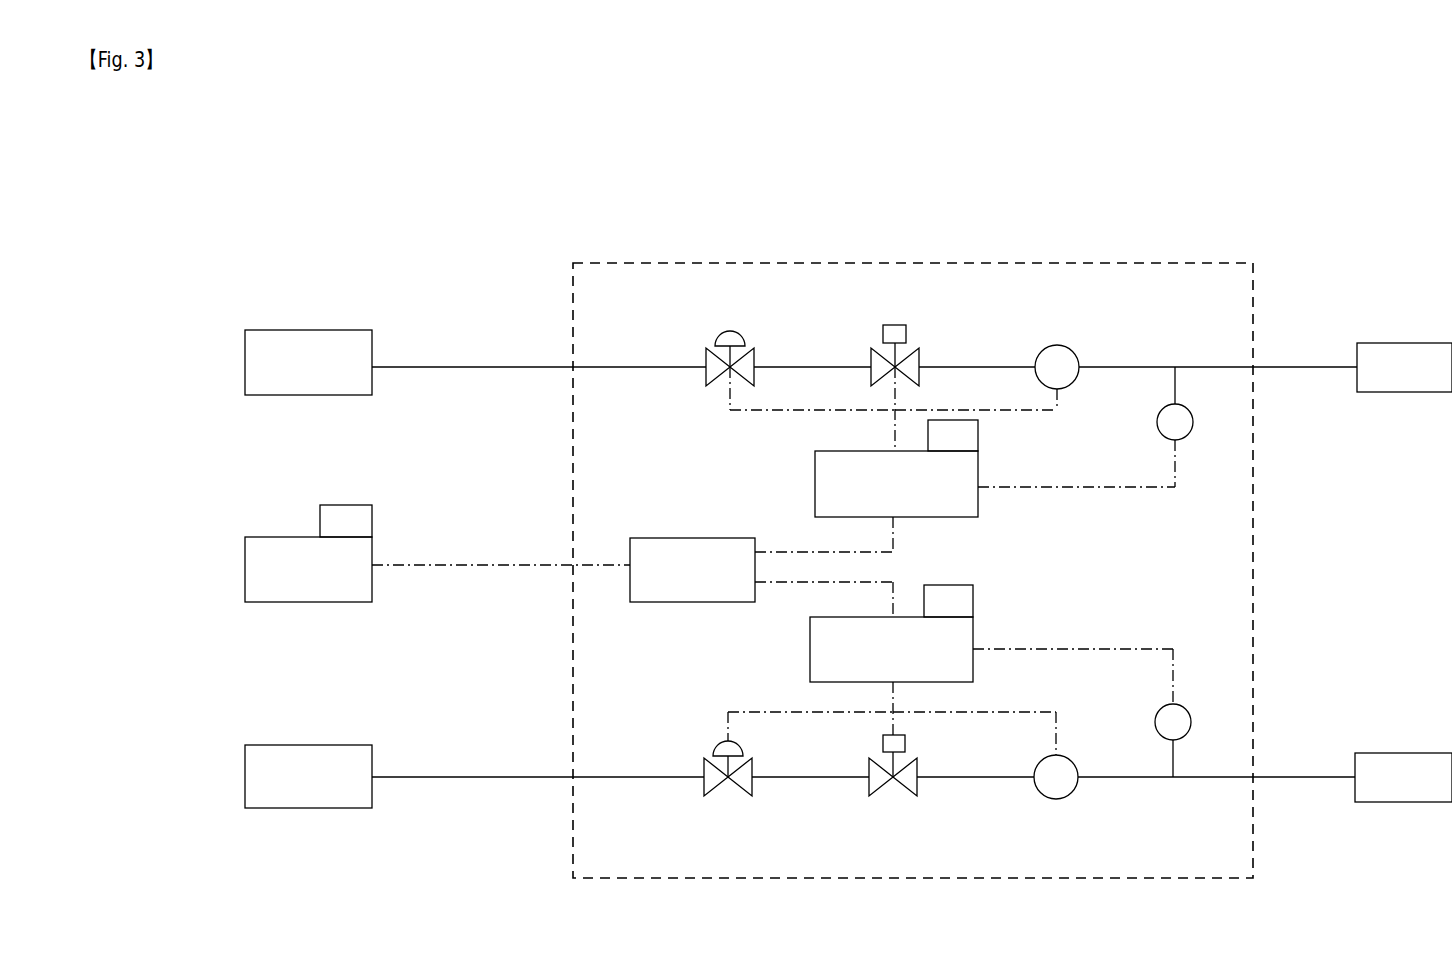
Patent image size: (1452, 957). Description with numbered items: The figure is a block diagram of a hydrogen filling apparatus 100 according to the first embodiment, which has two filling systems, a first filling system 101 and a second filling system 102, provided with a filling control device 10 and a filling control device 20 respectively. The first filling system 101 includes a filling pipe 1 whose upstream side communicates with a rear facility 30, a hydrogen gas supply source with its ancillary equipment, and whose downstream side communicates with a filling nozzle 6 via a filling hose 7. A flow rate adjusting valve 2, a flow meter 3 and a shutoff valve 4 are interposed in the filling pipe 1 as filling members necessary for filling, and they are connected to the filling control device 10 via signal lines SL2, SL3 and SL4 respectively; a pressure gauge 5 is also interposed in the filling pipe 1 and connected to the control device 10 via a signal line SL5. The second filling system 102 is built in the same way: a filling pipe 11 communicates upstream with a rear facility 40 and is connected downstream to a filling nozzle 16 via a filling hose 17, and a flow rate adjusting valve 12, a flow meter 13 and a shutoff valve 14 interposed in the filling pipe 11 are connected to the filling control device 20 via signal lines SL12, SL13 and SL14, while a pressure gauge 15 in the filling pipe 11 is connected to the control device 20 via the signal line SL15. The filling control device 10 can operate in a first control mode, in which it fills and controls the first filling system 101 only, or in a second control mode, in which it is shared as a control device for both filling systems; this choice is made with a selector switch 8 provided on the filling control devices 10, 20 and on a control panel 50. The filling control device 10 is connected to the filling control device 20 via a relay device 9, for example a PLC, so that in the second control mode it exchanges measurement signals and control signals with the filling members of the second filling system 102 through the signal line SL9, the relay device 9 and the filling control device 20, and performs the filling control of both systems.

The filling pipe 1 is at (636, 367).
The flow rate adjusting valve 2 is at (750, 346).
The flow meter 3 is at (1070, 350).
The shutoff valve 4 is at (912, 348).
The pressure gauge 5 is at (1187, 438).
The filling nozzle 6 is at (1410, 343).
The filling hose 7 is at (1287, 367).
The selector switch 8 is at (349, 505).
The relay device 9 is at (684, 538).
The filling control device 10 is at (815, 478).
The filling pipe 11 is at (622, 777).
The flow rate adjusting valve 12 is at (722, 782).
The flow meter 13 is at (1066, 797).
The shutoff valve 14 is at (890, 782).
The pressure gauge 15 is at (1186, 708).
The filling nozzle 16 is at (1408, 753).
The filling hose 17 is at (1290, 777).
The filling control device 20 is at (973, 667).
The rear facility 30 is at (334, 330).
The rear facility 40 is at (332, 745).
The control panel 50 is at (298, 537).
The hydrogen filling apparatus 100 is at (654, 222).
The first filling system 101 is at (1150, 340).
The second filling system 102 is at (1158, 808).
The signal line SL2 is at (727, 398).
The signal line SL3 is at (1054, 412).
The signal line SL4 is at (905, 402).
The signal line SL5 is at (1098, 490).
The signal line SL9 is at (794, 550).
The signal line SL12 is at (727, 708).
The signal line SL13 is at (1057, 732).
The signal line SL14 is at (897, 718).
The signal line SL15 is at (1130, 647).